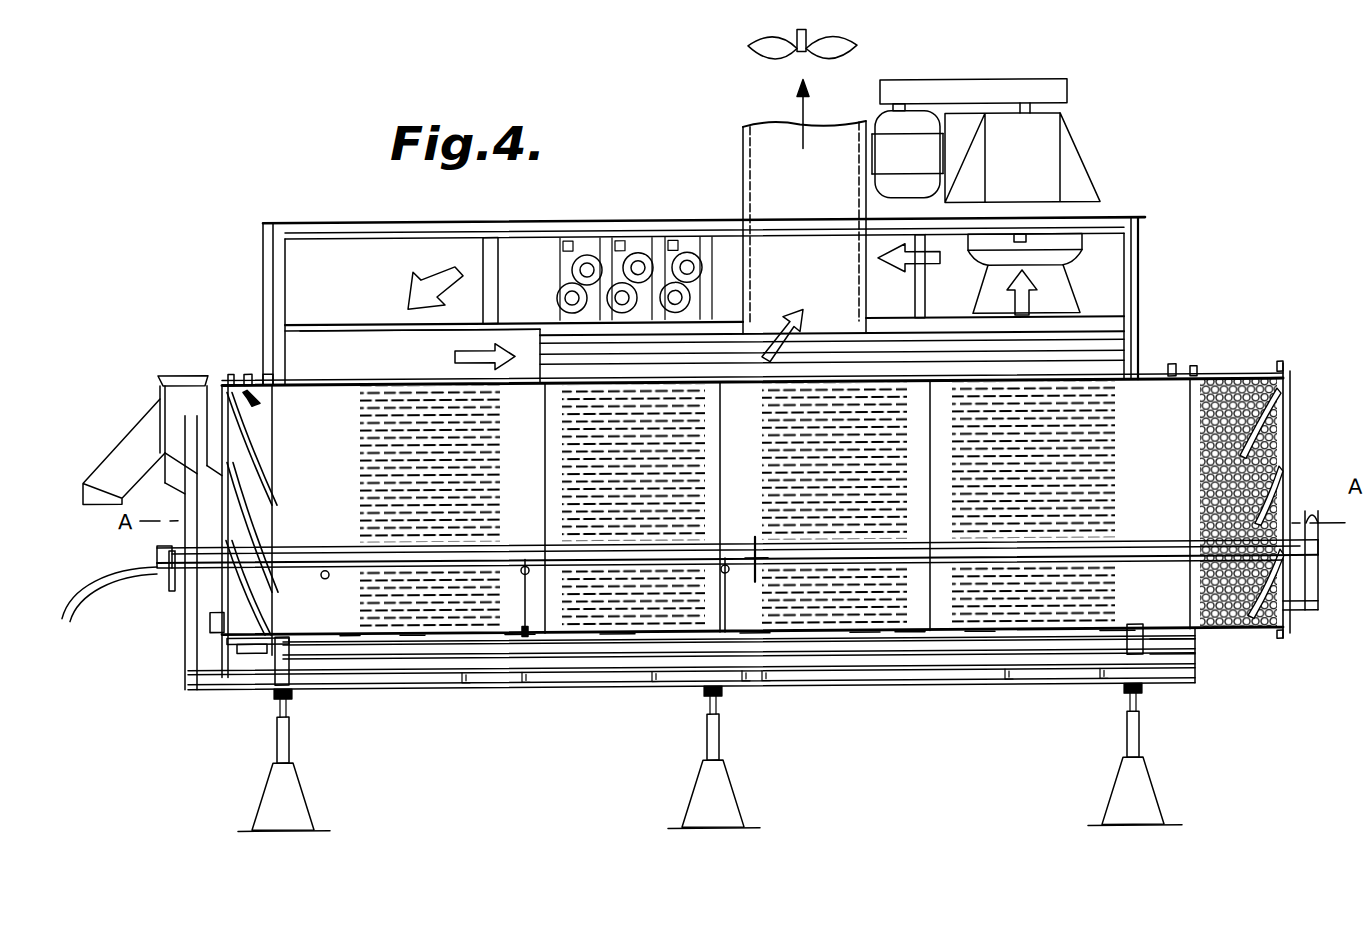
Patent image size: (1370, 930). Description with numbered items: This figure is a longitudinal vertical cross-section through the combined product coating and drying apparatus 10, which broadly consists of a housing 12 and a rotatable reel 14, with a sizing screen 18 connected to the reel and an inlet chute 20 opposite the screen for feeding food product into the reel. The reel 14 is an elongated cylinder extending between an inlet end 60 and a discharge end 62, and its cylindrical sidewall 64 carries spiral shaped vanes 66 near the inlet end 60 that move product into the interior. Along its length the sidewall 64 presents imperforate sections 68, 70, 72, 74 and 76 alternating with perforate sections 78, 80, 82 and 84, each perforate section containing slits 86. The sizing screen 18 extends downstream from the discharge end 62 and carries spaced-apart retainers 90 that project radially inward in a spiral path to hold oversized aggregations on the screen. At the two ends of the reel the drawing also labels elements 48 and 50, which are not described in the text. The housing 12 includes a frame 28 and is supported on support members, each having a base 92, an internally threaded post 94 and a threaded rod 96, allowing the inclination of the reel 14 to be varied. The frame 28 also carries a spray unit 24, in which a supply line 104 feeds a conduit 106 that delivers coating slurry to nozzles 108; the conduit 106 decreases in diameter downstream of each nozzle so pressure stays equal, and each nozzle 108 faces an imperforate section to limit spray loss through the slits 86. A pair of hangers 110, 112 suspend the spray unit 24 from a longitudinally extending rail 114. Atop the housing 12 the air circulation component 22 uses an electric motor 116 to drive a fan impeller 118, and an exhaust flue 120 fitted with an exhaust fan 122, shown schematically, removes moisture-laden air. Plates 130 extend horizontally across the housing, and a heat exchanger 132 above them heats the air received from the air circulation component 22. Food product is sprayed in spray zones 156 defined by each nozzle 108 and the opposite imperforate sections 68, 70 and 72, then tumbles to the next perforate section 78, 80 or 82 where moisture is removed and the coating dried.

The combined product coating and drying apparatus 10 is at (1220, 224).
The housing 12 is at (1150, 255).
The rotatable reel 14 is at (303, 368).
The sizing screen 18 is at (1255, 374).
The inlet chute 20 is at (187, 366).
The air circulation component 22 is at (1113, 152).
The spray unit 24 is at (159, 582).
The frame 28 is at (222, 690).
The seal 48 is at (249, 374).
The seal 50 is at (1172, 372).
The inlet end 60 is at (192, 408).
The discharge end 62 is at (1190, 432).
The cylindrical sidewall 64 is at (372, 386).
The spiral shaped vanes 66 is at (240, 475).
The imperforate section 68 is at (350, 637).
The imperforate section 70 is at (522, 637).
The imperforate section 72 is at (757, 637).
The imperforate section 74 is at (910, 626).
The imperforate section 76 is at (1128, 612).
The perforate section 78 is at (415, 637).
The perforate section 80 is at (620, 637).
The perforate section 82 is at (858, 637).
The perforate section 84 is at (982, 627).
The slits 86 is at (405, 392).
The retainers 90 is at (1284, 418).
The base 92 is at (298, 800).
The internally threaded post 94 is at (276, 752).
The threaded rod 96 is at (275, 708).
The supply line 104 is at (98, 590).
The conduit 106 is at (316, 556).
The nozzles 108 is at (323, 579).
The hanger 110 is at (168, 590).
The hanger 112 is at (752, 552).
The rail 114 is at (538, 547).
The electric motor 116 is at (877, 122).
The fan impeller 118 is at (1068, 250).
The exhaust flue 120 is at (743, 160).
The exhaust fan 122 is at (858, 50).
The plates 130 is at (383, 327).
The heat exchanger 132 is at (570, 262).
The spray zones 156 is at (310, 637).